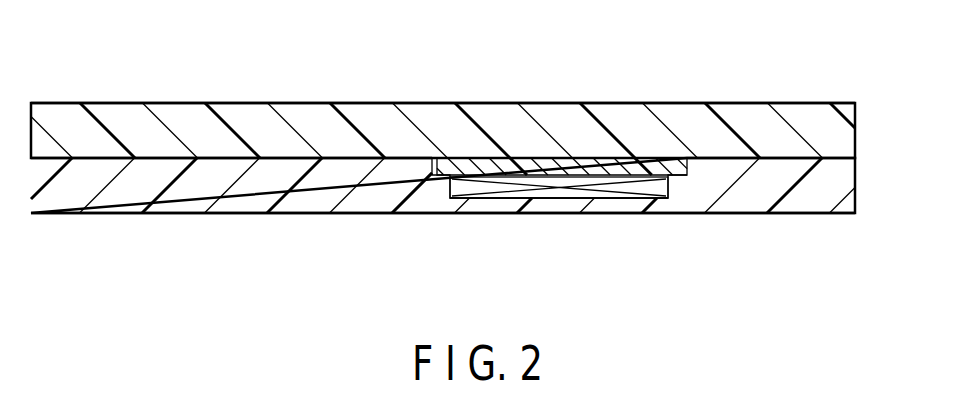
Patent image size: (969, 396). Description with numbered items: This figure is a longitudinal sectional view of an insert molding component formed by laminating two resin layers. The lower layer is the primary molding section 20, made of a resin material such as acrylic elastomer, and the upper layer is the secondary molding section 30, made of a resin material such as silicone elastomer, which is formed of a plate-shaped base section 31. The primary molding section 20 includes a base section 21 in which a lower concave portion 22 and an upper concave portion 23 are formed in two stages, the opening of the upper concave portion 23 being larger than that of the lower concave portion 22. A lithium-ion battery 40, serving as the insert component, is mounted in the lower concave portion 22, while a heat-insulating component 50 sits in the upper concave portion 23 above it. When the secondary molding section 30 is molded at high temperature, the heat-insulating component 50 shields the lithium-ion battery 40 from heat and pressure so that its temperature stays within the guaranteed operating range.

The primary molding section 20 is at (840, 179).
The base section 21 is at (745, 197).
The lower concave portion 22 is at (477, 192).
The upper concave portion 23 is at (447, 172).
The secondary molding section 30 is at (840, 132).
The plate-shaped base section 31 is at (748, 118).
The lithium-ion battery 40 is at (633, 185).
The heat-insulating component 50 is at (505, 168).